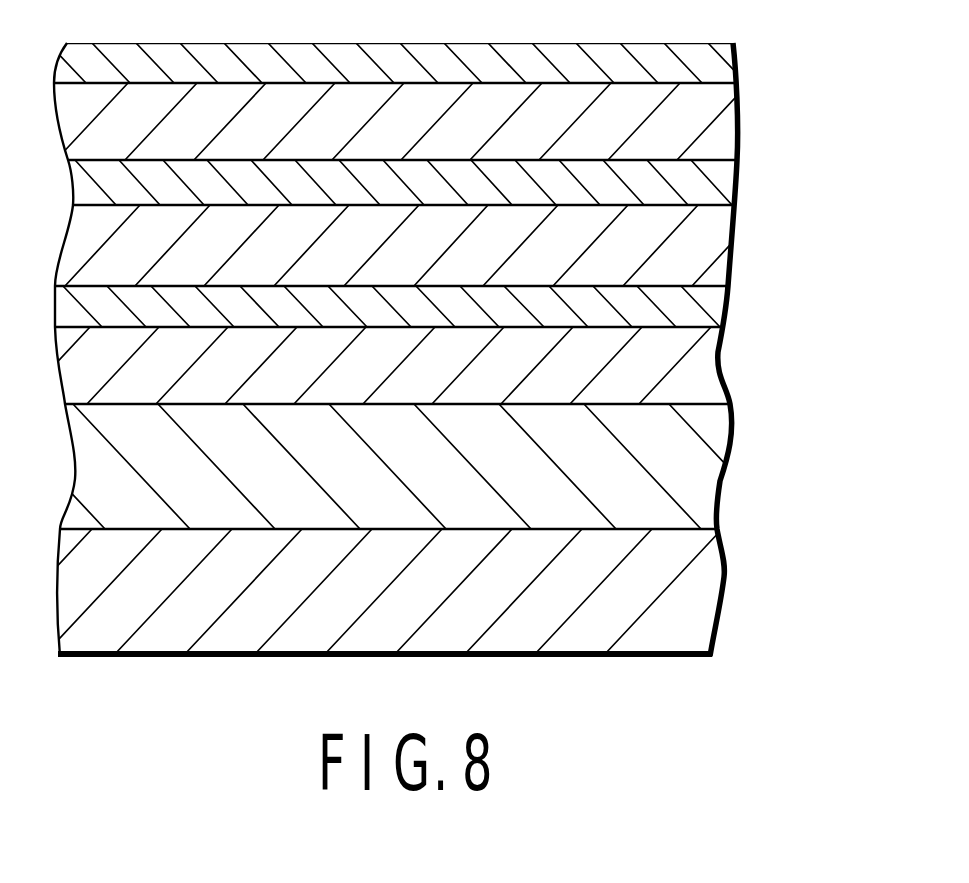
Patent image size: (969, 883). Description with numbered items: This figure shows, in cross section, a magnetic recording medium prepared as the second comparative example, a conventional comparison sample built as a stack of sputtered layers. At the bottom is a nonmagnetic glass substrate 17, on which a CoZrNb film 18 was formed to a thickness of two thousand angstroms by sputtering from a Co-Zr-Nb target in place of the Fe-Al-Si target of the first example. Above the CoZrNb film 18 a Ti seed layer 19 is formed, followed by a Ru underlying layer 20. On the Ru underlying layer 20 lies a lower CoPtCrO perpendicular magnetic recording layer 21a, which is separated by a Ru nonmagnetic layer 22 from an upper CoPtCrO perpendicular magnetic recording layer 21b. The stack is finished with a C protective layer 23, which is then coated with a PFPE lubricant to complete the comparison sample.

The nonmagnetic glass substrate 17 is at (708, 597).
The CoZrNb film 18 is at (708, 472).
The Ti seed layer 19 is at (708, 375).
The Ru underlying layer 20 is at (710, 313).
The lower CoPtCrO perpendicular magnetic recording layer 21a is at (710, 253).
The upper CoPtCrO perpendicular magnetic recording layer 21b is at (716, 118).
The Ru nonmagnetic layer 22 is at (712, 187).
The C protective layer 23 is at (712, 67).